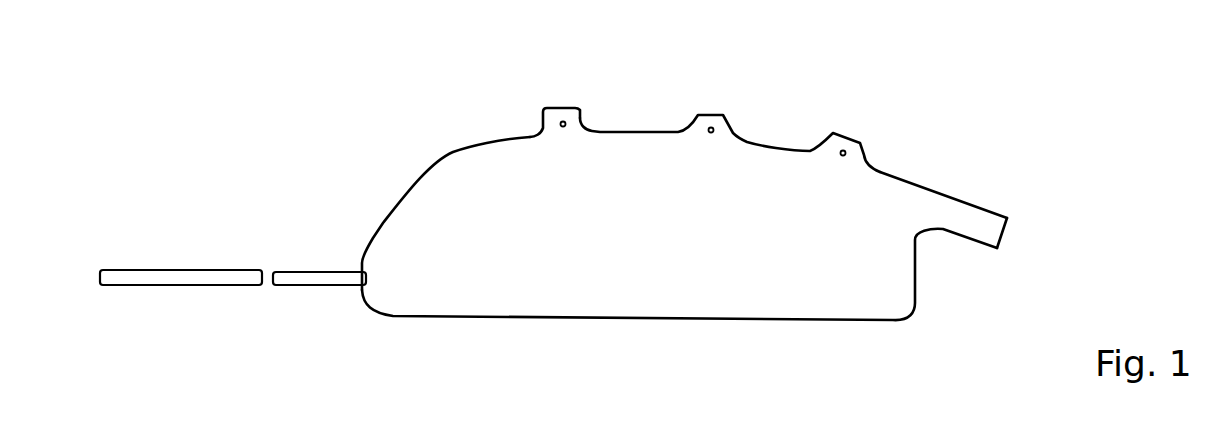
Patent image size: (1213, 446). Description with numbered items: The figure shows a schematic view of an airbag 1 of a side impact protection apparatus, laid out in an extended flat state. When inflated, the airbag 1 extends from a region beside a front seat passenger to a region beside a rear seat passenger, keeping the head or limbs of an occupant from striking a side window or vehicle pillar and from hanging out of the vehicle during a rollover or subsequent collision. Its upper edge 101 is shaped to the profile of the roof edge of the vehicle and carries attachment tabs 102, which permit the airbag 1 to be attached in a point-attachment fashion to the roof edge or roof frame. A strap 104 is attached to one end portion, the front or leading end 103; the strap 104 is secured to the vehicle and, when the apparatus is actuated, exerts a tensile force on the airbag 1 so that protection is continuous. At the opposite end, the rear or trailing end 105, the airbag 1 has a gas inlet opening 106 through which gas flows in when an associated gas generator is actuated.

The airbag 1 is at (897, 193).
The upper edge 101 is at (770, 135).
The attachment tabs 102 is at (577, 110).
The front or leading end 103 is at (374, 218).
The strap 104 is at (298, 280).
The rear or trailing end 105 is at (998, 198).
The gas inlet opening 106 is at (1014, 228).